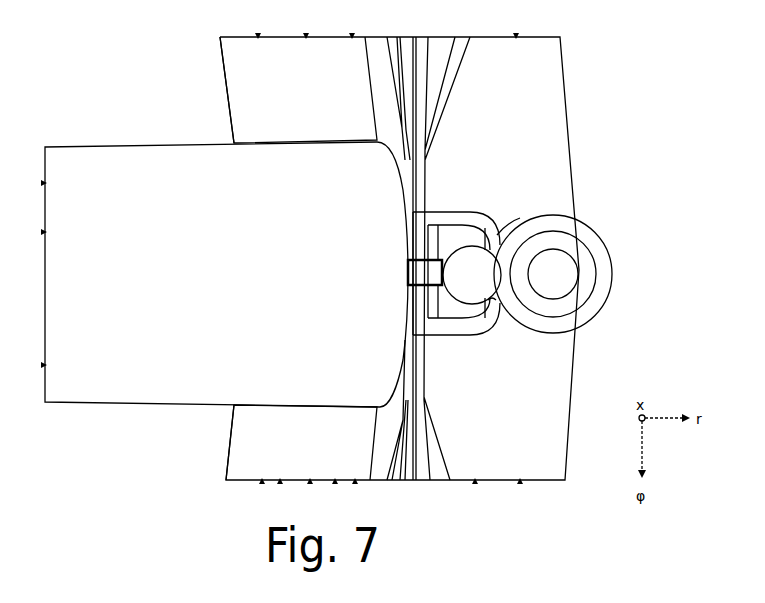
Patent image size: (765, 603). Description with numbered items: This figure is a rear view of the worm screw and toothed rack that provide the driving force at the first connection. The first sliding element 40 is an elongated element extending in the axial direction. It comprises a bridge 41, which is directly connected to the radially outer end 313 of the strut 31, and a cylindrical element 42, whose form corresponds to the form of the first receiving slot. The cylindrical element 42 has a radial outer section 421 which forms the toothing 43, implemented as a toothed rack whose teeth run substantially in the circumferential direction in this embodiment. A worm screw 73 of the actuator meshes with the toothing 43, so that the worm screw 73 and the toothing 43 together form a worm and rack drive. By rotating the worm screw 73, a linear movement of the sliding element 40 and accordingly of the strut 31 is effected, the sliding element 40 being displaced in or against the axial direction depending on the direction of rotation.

The strut 31 is at (128, 367).
The radially outer end 313 is at (397, 160).
The first sliding element 40 is at (443, 300).
The bridge 41 is at (423, 270).
The cylindrical element 42 is at (457, 290).
The radial outer section 421 is at (492, 305).
The toothing 43 is at (497, 233).
The worm screw 73 is at (612, 266).